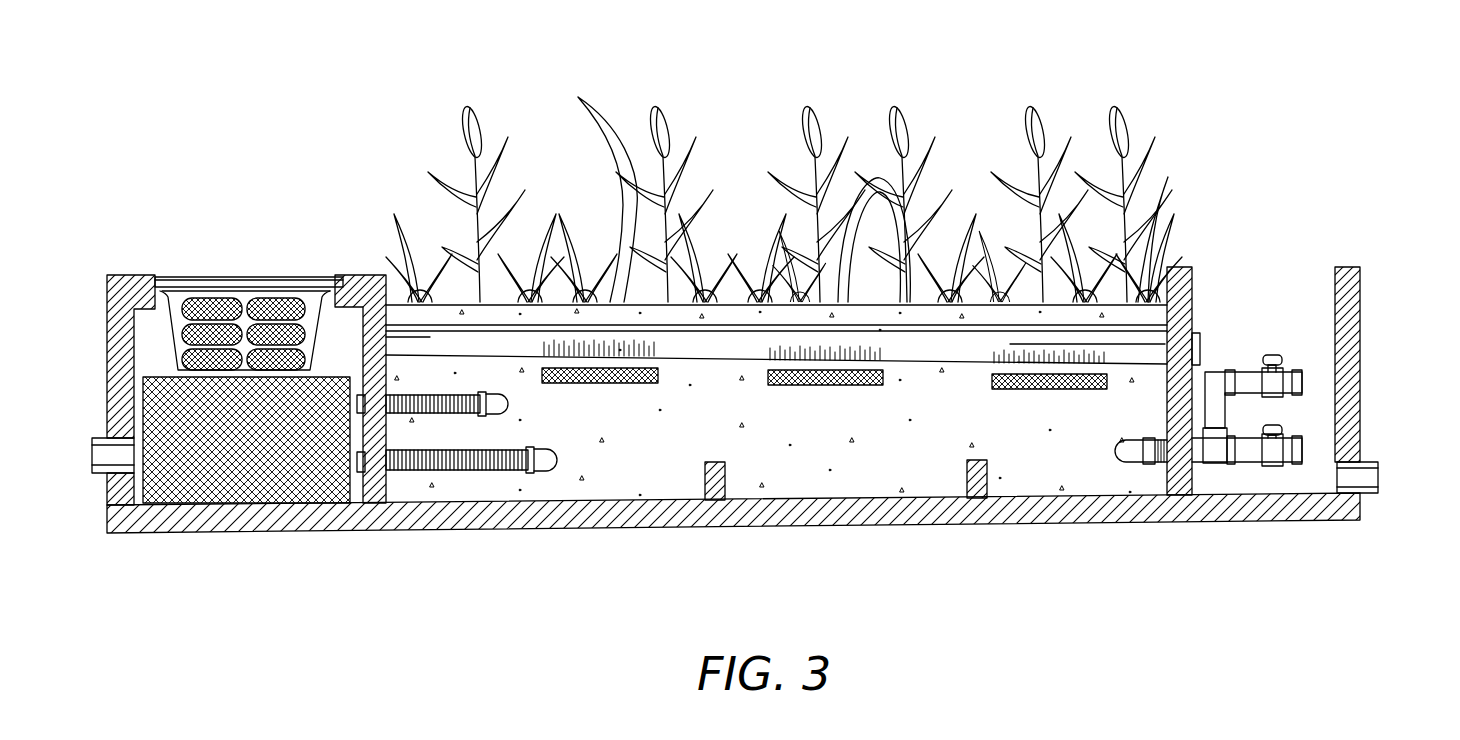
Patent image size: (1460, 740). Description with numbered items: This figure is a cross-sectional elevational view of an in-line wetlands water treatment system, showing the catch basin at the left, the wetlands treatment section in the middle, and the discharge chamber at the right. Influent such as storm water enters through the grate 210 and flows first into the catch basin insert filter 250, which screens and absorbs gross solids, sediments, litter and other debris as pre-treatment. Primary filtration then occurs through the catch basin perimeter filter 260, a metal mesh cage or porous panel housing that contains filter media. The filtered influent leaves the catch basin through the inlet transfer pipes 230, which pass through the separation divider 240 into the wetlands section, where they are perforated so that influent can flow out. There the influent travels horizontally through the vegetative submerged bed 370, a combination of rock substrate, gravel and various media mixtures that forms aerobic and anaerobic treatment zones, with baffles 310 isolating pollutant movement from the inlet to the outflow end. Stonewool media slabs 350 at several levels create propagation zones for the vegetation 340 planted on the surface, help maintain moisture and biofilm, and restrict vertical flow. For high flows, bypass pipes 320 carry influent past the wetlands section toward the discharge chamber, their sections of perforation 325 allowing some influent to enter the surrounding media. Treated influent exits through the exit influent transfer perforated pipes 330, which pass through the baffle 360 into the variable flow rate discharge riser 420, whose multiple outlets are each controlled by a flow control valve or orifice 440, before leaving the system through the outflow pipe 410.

The grate 210 is at (317, 280).
The inlet transfer pipes 230 is at (442, 415).
The separation divider 240 is at (377, 506).
The catch basin insert filter 250 is at (168, 322).
The catch basin perimeter filter 260 is at (303, 494).
The baffles 310 is at (967, 498).
The bypass pipes 320 is at (480, 333).
The sections of perforation 325 is at (1018, 357).
The exit influent transfer perforated pipes 330 is at (1140, 463).
The vegetation 340 is at (693, 163).
The stonewool media slabs 350 is at (992, 378).
The baffle 360 is at (1178, 270).
The vegetative submerged bed 370 is at (1142, 318).
The outflow pipe 410 is at (1376, 462).
The variable flow rate discharge riser 420 is at (1213, 368).
The flow control valve and/or flow control orifice 440 is at (1277, 357).